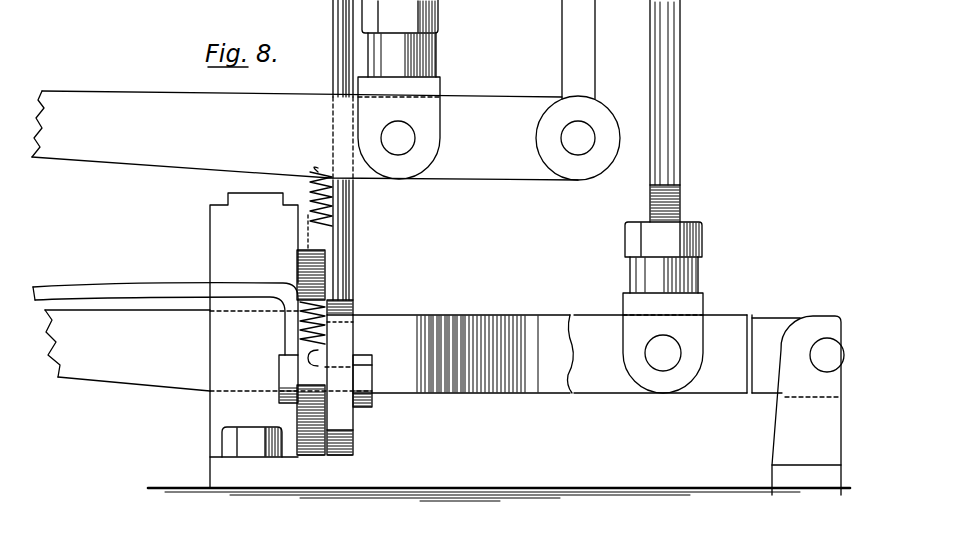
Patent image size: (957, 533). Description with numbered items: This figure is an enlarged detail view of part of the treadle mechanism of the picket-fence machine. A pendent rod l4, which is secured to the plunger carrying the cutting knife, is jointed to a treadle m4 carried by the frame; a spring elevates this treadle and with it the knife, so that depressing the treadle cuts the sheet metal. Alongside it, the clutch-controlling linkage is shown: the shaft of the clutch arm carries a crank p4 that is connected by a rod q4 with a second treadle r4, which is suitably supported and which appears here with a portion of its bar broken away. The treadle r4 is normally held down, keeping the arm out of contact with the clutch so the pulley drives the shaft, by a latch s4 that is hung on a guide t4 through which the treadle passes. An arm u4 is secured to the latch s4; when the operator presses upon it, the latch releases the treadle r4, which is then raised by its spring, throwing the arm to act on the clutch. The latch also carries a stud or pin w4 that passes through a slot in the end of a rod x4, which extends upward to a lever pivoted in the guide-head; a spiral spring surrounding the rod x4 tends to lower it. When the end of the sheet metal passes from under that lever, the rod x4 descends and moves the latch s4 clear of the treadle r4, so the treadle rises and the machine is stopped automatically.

The pendent rod l4 is at (429, 47).
The treadle m4 is at (326, 90).
The rod q4 is at (676, 111).
The crank p4 is at (678, 307).
The treadle r4 is at (552, 354).
The bar r is at (127, 350).
The guide t4 is at (254, 340).
The arm u4 is at (165, 311).
The stud or pin w4 is at (252, 378).
The latch s4 is at (314, 311).
The rod x4 is at (346, 233).